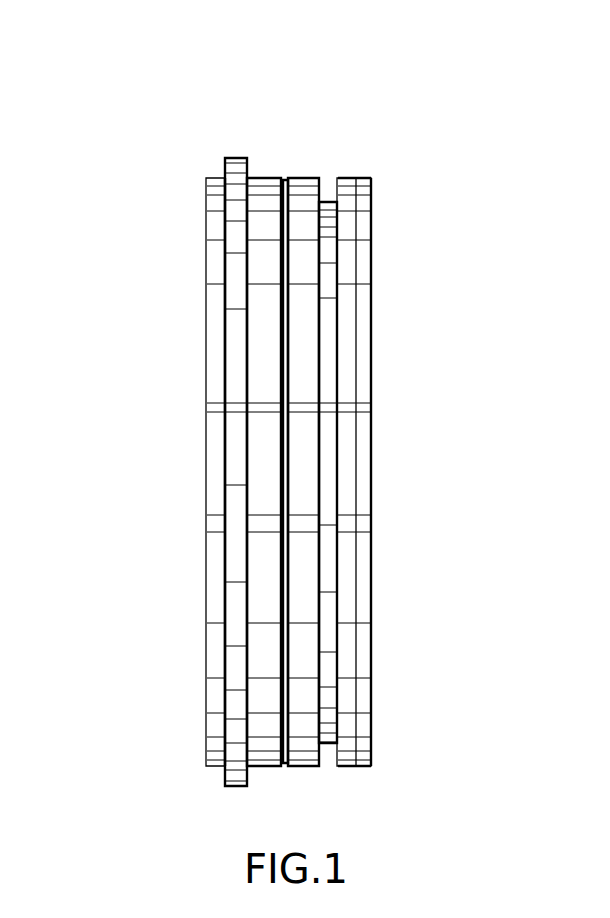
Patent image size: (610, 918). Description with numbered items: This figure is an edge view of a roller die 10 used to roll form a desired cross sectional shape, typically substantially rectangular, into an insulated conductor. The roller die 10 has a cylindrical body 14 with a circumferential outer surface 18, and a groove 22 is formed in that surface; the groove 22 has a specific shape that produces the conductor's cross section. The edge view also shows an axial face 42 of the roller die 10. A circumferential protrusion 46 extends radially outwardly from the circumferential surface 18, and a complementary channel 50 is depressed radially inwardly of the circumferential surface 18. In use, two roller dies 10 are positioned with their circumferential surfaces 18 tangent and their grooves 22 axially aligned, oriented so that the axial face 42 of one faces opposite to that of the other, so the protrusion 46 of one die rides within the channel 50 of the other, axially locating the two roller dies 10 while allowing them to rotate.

The roller die 10 is at (413, 118).
The cylindrical body 14 is at (206, 267).
The circumferential outer surface 18 is at (263, 178).
The groove 22 is at (285, 176).
The axial face 42 is at (373, 240).
The circumferential protrusion 46 is at (236, 157).
The channel 50 is at (328, 185).